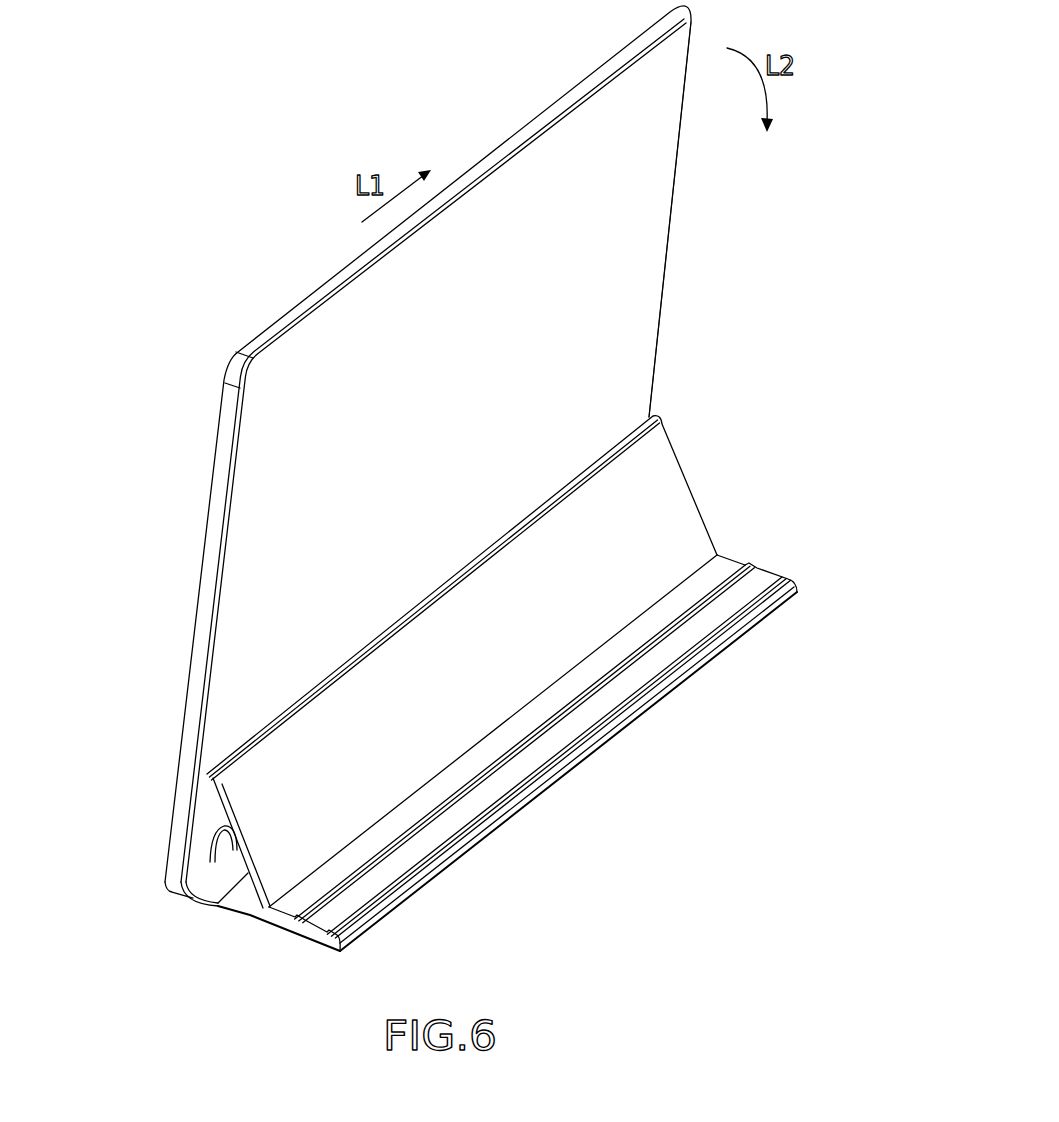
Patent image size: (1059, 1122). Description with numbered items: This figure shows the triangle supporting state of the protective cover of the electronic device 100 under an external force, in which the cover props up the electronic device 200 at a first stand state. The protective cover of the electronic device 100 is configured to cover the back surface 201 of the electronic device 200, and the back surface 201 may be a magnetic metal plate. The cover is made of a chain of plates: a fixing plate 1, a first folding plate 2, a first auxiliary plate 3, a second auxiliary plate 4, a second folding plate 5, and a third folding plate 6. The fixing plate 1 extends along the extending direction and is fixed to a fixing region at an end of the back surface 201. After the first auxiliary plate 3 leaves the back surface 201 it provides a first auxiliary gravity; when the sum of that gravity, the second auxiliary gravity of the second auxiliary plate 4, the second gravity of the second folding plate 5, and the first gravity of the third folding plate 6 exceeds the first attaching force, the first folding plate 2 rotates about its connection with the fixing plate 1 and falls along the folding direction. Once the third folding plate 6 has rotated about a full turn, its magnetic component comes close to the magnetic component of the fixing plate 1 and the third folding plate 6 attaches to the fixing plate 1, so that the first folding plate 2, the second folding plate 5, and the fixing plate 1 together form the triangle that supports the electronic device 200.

The electronic device 200 is at (200, 443).
The back surface 201 is at (655, 232).
The protective cover of the electronic device 100 is at (750, 542).
The first folding plate 2 is at (678, 492).
The first auxiliary plate 3 is at (695, 598).
The second auxiliary plate 4 is at (680, 647).
The second folding plate 5 is at (243, 902).
The fixing plate 1 is at (236, 848).
The third folding plate 6 is at (216, 890).